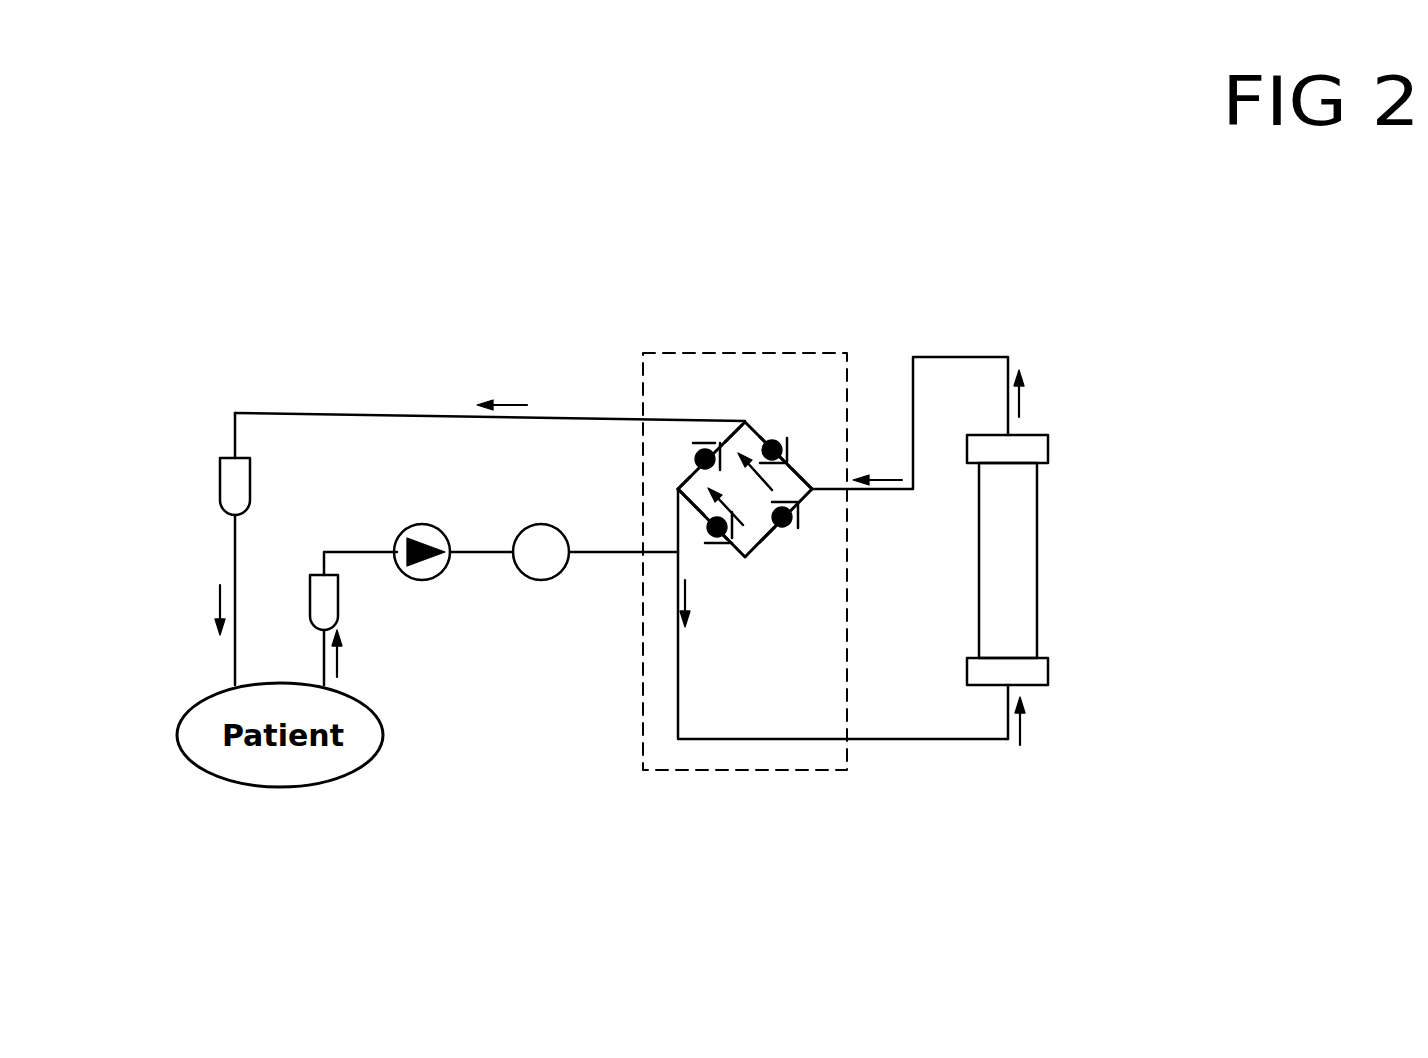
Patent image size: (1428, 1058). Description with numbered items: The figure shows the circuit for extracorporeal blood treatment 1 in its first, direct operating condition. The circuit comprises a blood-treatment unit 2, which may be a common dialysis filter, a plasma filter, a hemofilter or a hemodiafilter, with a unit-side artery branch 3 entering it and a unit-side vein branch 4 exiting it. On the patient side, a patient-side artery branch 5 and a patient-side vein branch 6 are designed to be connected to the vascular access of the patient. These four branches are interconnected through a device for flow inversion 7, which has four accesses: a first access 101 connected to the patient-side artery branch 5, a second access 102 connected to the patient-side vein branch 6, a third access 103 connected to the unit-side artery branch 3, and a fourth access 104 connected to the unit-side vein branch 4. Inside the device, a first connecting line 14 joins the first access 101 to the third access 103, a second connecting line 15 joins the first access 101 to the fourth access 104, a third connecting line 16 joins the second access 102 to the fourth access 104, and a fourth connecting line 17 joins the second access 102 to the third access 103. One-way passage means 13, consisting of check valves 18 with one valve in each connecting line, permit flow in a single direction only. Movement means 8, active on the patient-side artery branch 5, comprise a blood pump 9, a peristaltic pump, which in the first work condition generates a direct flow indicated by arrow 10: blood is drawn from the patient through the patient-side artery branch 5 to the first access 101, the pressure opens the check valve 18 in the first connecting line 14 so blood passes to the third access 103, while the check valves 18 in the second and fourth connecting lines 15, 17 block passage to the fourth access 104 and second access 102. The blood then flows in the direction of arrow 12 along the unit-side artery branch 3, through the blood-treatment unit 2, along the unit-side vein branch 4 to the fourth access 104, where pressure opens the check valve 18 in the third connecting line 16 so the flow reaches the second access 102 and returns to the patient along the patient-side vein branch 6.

The circuit for extracorporeal blood treatment 1 is at (212, 210).
The blood-treatment unit 2 is at (1037, 557).
The unit-side artery branch 3 is at (935, 740).
The unit-side vein branch 4 is at (975, 357).
The patient-side artery branch 5 is at (355, 548).
The patient-side vein branch 6 is at (425, 413).
The device for flow inversion 7 is at (753, 378).
The movement means 8 is at (505, 600).
The blood pump 9 is at (557, 580).
The arrow indicating direct flow 10 is at (413, 523).
The arrow indicating flow direction in unit-side artery branch 12 is at (1020, 732).
The one-way passage means 13 is at (773, 420).
The first connecting line 14 is at (702, 513).
The second connecting line 15 is at (768, 542).
The third connecting line 16 is at (812, 487).
The fourth connecting line 17 is at (677, 487).
The check valve 18 is at (705, 449).
The first access 101 is at (717, 550).
The second access 102 is at (733, 434).
The third access 103 is at (677, 494).
The fourth access 104 is at (799, 470).